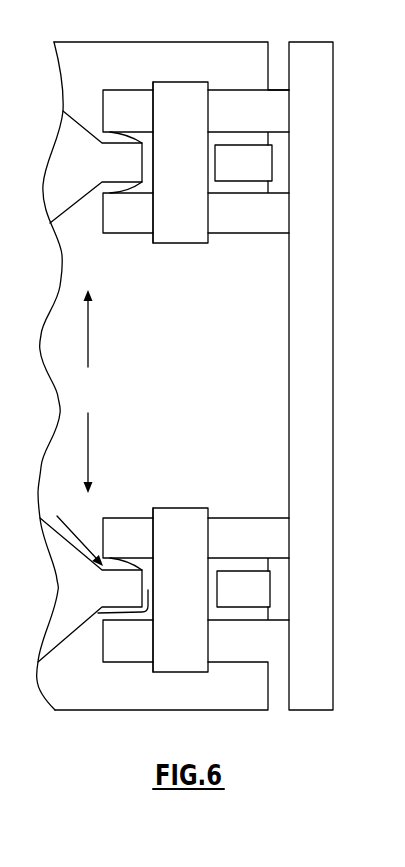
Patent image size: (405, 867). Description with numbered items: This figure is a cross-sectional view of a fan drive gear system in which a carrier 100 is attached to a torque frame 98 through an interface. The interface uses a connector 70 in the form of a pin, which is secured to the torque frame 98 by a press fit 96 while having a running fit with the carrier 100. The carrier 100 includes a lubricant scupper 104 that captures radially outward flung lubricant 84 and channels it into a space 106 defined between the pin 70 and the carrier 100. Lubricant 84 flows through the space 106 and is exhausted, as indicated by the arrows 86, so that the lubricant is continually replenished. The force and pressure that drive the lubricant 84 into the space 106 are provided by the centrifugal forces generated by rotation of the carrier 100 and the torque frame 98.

The connector 70 is at (190, 227).
The lubricant 84 is at (68, 537).
The arrows 86 is at (93, 626).
The press fit 96 is at (158, 104).
The torque frame 98 is at (317, 367).
The carrier 100 is at (262, 592).
The lubricant scupper 104 is at (70, 213).
The space 106 is at (208, 590).